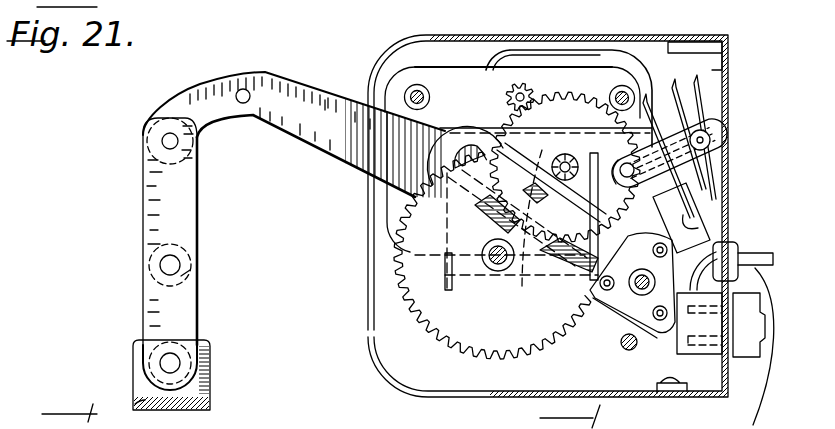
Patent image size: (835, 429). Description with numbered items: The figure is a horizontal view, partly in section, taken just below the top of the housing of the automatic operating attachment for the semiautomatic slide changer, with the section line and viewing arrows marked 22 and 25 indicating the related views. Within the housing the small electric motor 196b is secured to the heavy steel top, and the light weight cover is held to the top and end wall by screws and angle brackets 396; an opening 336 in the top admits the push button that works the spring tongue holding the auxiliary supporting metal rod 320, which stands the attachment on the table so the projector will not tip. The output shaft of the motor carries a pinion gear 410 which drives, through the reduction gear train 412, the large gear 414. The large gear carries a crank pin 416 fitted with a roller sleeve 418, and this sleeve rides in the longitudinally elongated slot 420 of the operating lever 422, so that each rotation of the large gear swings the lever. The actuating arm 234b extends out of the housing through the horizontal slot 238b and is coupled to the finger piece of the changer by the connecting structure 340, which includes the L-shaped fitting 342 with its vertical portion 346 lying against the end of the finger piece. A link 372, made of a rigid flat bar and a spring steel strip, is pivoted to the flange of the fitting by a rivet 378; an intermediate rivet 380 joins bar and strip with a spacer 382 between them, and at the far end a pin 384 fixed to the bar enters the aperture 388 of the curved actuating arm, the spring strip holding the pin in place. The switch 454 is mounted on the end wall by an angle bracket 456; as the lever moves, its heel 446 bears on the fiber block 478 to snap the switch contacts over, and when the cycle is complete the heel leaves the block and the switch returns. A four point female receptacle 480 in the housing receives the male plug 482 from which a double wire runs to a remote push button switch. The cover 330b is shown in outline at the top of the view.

The view direction arrow 22 is at (337, 314).
The view direction arrow 25 is at (447, 52).
The electric motor 196b is at (447, 78).
The actuating arm 234b is at (343, 140).
The horizontal slot 238b is at (368, 229).
The metal rod 320 is at (620, 342).
The cover 330b is at (622, 33).
The opening 336 is at (427, 397).
The connecting structure 340 is at (128, 283).
The L-shaped fitting 342 is at (210, 377).
The vertical portion 346 is at (140, 400).
The link 372 is at (250, 203).
The rivet 378 is at (172, 363).
The intermediate rivet 380 is at (172, 265).
The spacer 382 is at (196, 276).
The pin 384 is at (165, 138).
The aperture 388 is at (247, 89).
The angle brackets 396 is at (698, 43).
The pinion gear 410 is at (527, 87).
The reduction gear train 412 is at (560, 107).
The large gear 414 is at (537, 333).
The crank pin 416 is at (536, 268).
The roller sleeve 418 is at (561, 162).
The elongated slot 420 is at (506, 231).
The operating lever 422 is at (438, 140).
The heel 446 is at (634, 234).
The switch 454 is at (705, 196).
The angle bracket 456 is at (718, 128).
The fiber block 478 is at (734, 243).
The female receptacle 480 is at (687, 326).
The male plug 482 is at (747, 344).